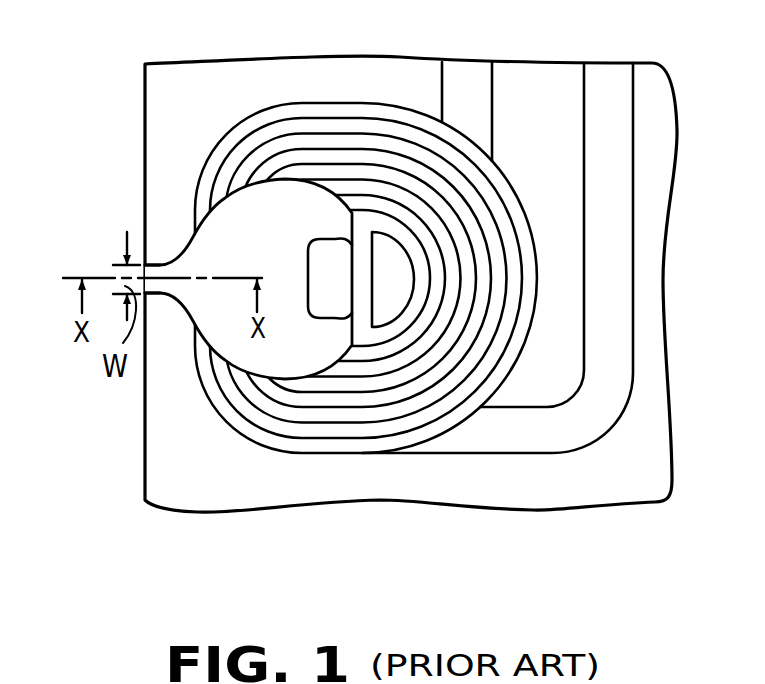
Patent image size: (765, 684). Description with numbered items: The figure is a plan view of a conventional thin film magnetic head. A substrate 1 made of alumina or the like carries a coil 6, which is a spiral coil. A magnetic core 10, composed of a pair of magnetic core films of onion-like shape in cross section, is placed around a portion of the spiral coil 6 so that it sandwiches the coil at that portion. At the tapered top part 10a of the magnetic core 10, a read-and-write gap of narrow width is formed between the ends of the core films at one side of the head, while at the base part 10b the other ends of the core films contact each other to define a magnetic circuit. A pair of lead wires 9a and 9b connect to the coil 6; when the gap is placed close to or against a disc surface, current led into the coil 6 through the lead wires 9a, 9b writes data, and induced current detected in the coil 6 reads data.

The substrate 1 is at (157, 452).
The coil 6 is at (230, 123).
The lead wire 9a is at (458, 75).
The lead wire 9b is at (605, 82).
The magnetic core 10 is at (192, 228).
The tapered top part 10a is at (165, 262).
The base part 10b is at (330, 300).